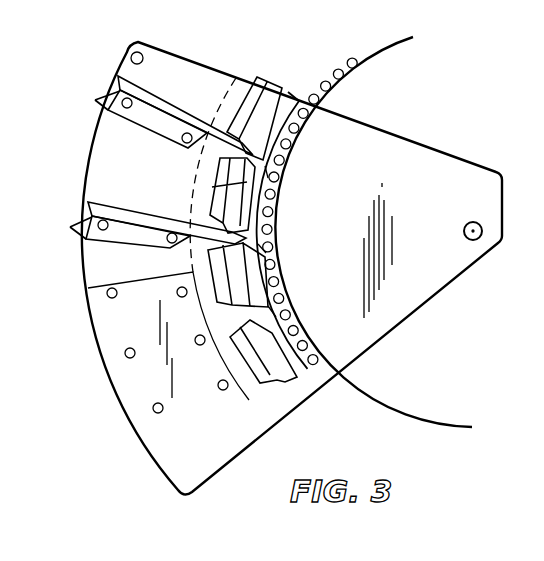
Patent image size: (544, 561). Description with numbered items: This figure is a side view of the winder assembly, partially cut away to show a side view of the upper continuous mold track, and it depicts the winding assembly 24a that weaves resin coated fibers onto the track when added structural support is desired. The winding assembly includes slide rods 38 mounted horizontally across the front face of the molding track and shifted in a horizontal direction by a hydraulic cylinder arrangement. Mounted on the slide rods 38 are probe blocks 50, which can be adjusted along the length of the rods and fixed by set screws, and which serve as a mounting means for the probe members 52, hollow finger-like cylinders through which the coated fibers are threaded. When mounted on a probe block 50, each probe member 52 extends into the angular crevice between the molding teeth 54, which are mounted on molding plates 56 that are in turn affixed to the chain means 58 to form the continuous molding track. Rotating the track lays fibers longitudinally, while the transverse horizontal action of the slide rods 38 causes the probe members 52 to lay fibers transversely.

The winding assembly 24a is at (153, 374).
The slide rod 38 is at (97, 101).
The probe block 50 is at (162, 123).
The probe member 52 is at (170, 100).
The molding tooth 54 is at (241, 82).
The molding plate 56 is at (284, 102).
The chain means 58 is at (346, 82).